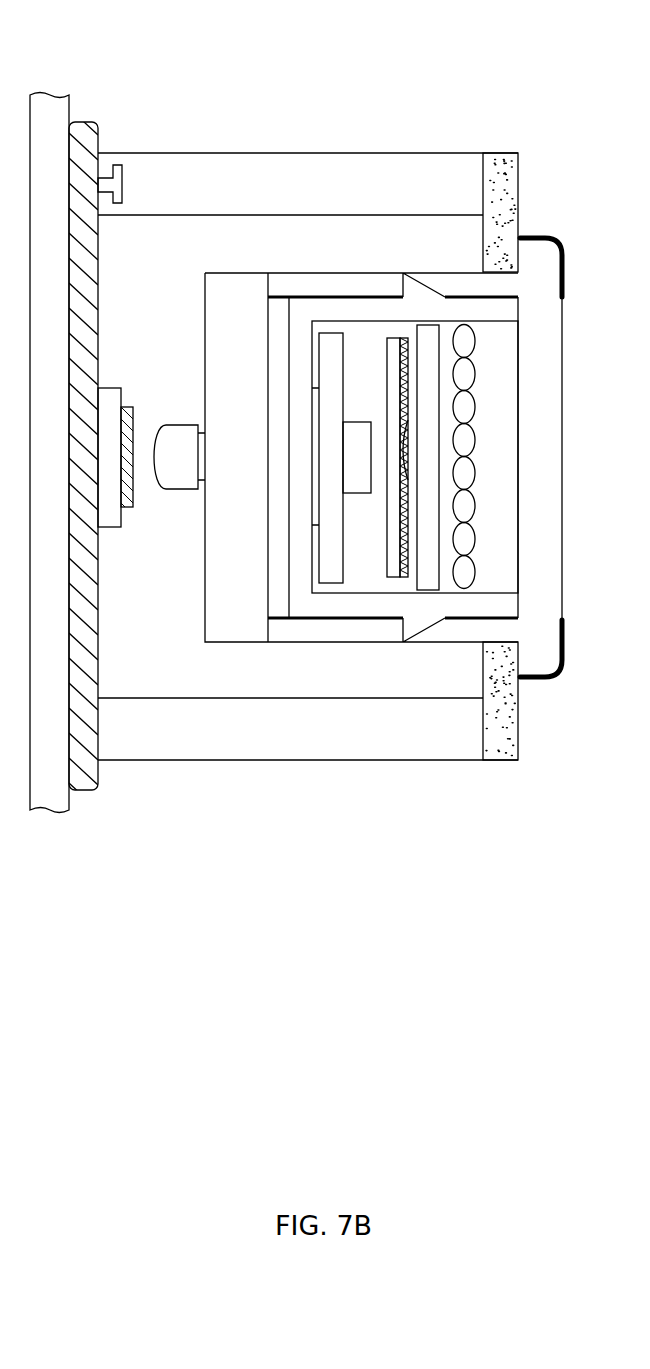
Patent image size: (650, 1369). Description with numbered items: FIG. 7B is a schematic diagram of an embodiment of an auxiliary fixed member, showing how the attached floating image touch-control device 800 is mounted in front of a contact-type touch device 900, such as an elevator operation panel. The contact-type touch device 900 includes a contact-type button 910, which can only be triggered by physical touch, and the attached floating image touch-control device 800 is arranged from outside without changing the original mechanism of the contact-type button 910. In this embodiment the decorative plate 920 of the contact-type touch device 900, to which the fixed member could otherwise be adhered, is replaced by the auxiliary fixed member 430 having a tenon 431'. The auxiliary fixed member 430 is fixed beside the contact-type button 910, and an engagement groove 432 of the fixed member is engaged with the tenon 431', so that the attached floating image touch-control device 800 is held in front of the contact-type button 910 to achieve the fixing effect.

The auxiliary fixed member 430 is at (83, 135).
The tenon 431' is at (127, 143).
The engagement groove 432 is at (123, 183).
The contact-type touch device 900 is at (72, 851).
The decorative plate 920 is at (68, 785).
The contact-type button 910 is at (133, 507).
The attached floating image touch-control device 800 is at (420, 852).